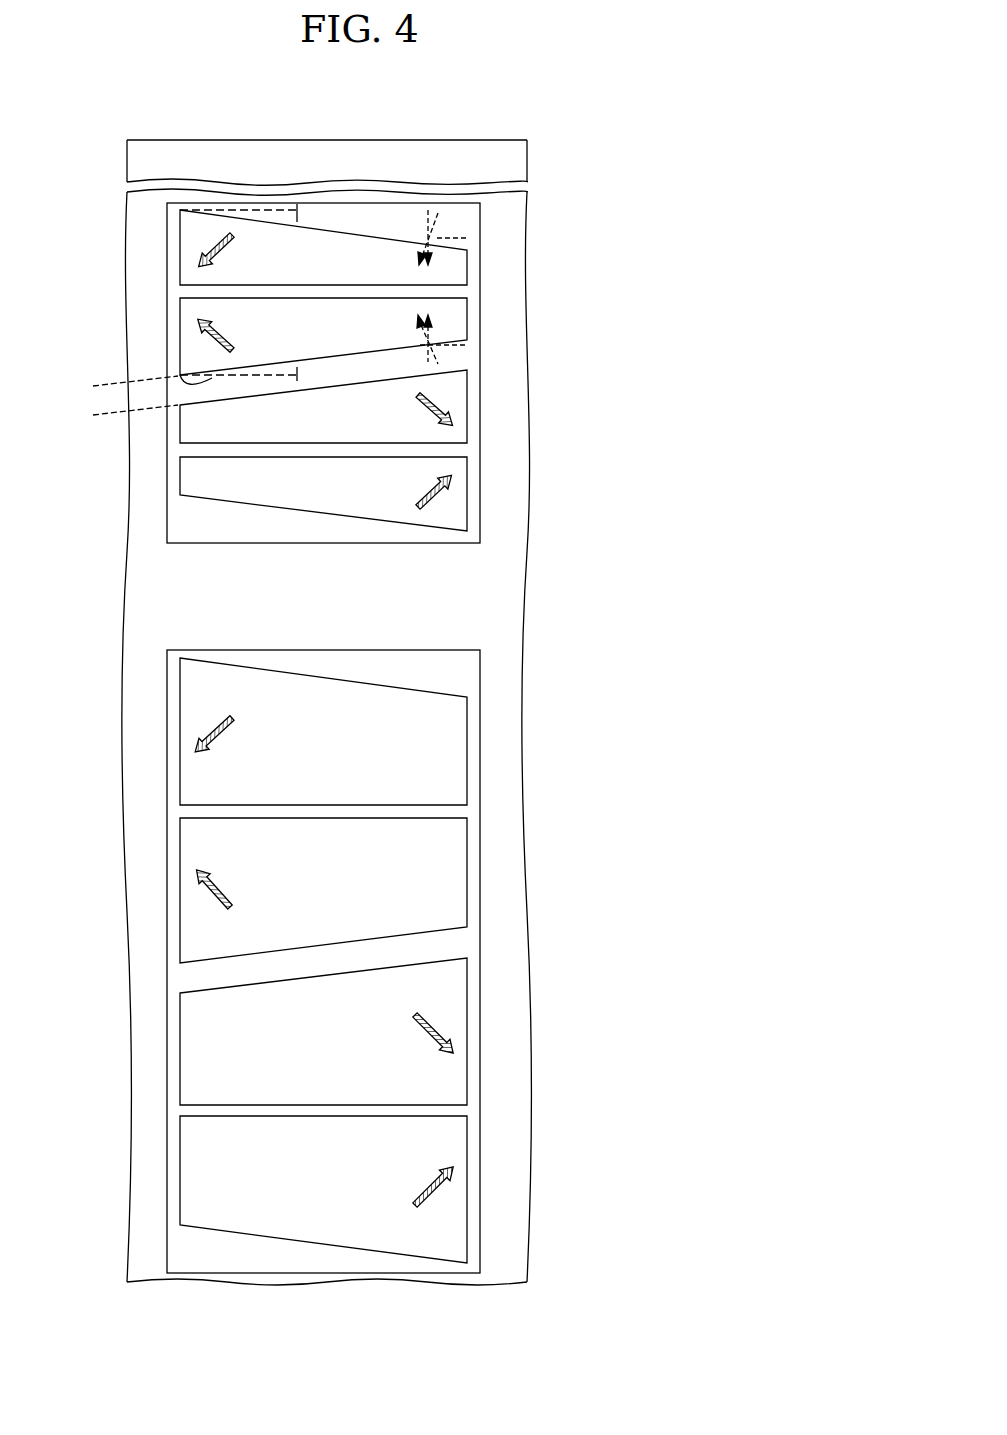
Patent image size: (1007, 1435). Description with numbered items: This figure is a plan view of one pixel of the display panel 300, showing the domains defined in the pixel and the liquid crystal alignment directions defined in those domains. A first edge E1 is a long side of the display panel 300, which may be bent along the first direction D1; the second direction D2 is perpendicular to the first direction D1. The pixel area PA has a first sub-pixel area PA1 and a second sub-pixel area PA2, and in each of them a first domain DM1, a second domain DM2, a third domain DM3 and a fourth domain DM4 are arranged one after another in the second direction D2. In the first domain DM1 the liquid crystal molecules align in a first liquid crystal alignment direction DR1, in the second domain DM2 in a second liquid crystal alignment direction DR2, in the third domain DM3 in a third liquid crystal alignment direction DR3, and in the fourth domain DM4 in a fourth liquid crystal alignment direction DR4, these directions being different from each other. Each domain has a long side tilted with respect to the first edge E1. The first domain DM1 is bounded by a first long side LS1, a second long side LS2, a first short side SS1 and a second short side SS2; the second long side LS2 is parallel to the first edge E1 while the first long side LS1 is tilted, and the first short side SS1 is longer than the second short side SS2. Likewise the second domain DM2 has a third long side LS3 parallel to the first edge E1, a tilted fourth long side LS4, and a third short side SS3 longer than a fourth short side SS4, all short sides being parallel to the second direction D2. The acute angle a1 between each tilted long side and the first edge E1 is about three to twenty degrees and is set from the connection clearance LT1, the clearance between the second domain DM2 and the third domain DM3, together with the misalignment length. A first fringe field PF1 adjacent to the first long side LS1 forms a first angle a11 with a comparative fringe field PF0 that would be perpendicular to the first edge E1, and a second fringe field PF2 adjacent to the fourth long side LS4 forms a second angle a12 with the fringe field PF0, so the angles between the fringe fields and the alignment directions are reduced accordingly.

The first edge E1 is at (165, 140).
The display panel 300 is at (525, 118).
The first sub-pixel area PA1 is at (480, 488).
The second sub-pixel area PA2 is at (480, 700).
The pixel area PA is at (600, 480).
The first domain DM1 is at (344, 261).
The second domain DM2 is at (344, 333).
The third domain DM3 is at (344, 426).
The fourth domain DM4 is at (344, 494).
The first liquid crystal alignment direction DR1 is at (218, 250).
The second liquid crystal alignment direction DR2 is at (218, 337).
The third liquid crystal alignment direction DR3 is at (430, 410).
The fourth liquid crystal alignment direction DR4 is at (430, 488).
The acute angle a1 is at (255, 294).
The first angle a11 is at (444, 233).
The second angle a12 is at (414, 343).
The first long side LS1 is at (250, 222).
The second long side LS2 is at (467, 285).
The third long side LS3 is at (467, 298).
The fourth long side LS4 is at (180, 377).
The first short side SS1 is at (180, 250).
The second short side SS2 is at (467, 265).
The third short side SS3 is at (180, 338).
The fourth short side SS4 is at (467, 320).
The connection clearance LT1 is at (93, 386).
The first fringe field PF1 is at (467, 248).
The fringe field PF0 is at (467, 238).
The second fringe field PF2 is at (467, 340).
The first direction D1 is at (692, 1200).
The second direction D2 is at (650, 1158).